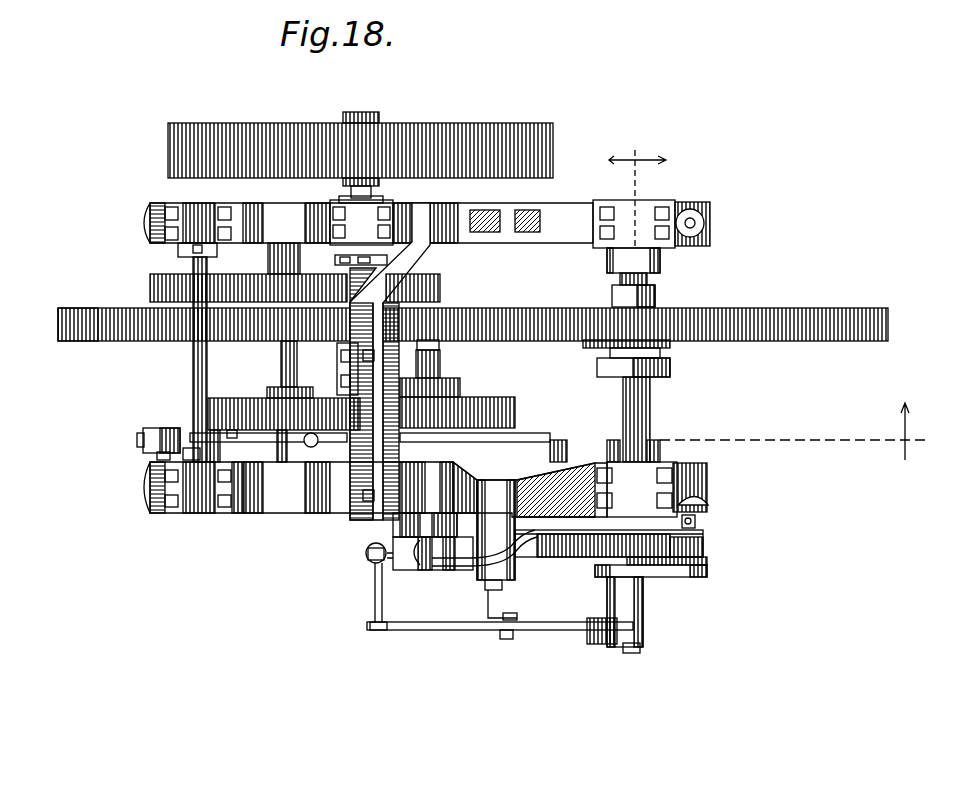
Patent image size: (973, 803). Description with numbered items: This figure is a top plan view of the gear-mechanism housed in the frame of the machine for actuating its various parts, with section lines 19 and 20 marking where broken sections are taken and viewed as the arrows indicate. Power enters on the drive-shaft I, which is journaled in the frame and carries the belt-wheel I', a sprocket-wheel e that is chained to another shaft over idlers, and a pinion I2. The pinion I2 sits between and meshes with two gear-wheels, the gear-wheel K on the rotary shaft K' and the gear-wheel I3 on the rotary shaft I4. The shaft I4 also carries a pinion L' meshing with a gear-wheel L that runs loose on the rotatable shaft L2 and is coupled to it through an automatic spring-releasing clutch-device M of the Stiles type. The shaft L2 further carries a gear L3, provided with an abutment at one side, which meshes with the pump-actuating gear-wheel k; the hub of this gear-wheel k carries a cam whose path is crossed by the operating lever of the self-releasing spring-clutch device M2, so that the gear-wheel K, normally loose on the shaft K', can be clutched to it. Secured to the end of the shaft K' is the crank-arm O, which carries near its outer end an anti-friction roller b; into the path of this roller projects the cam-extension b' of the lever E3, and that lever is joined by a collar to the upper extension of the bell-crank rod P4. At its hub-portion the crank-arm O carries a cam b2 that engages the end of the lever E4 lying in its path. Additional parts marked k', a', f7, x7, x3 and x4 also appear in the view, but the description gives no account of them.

The belt-wheel I' is at (360, 134).
The drive-shaft I is at (371, 192).
The section line 20 is at (637, 145).
The sprocket-wheel e is at (337, 258).
The gear-wheel K is at (473, 382).
The gear-wheel L is at (284, 272).
The pinion L' is at (181, 258).
The rotary shaft I4 is at (192, 362).
The gear-wheel I3 is at (106, 340).
The spring-releasing clutch-device M is at (283, 307).
The rotatable shaft L2 is at (282, 377).
The pinion I2 is at (342, 333).
The gear L3 is at (207, 412).
The pump-actuating gear-wheel k is at (471, 403).
The pinion hub k' is at (445, 359).
The bar a' is at (483, 453).
The rotary shaft K' is at (625, 401).
The self-releasing spring-clutch device M2 is at (662, 356).
The section line 19 is at (811, 431).
The rod f7 is at (330, 446).
The post x7 is at (238, 462).
The lever E3 is at (448, 570).
The hanger block x3 is at (488, 588).
The cam-extension b' is at (505, 560).
The anti-friction roller b is at (626, 547).
The bell-crank rod P4 is at (697, 518).
The crank-arm O is at (620, 577).
The lever E4 is at (458, 632).
The nut x4 is at (507, 640).
The cam b2 is at (597, 645).